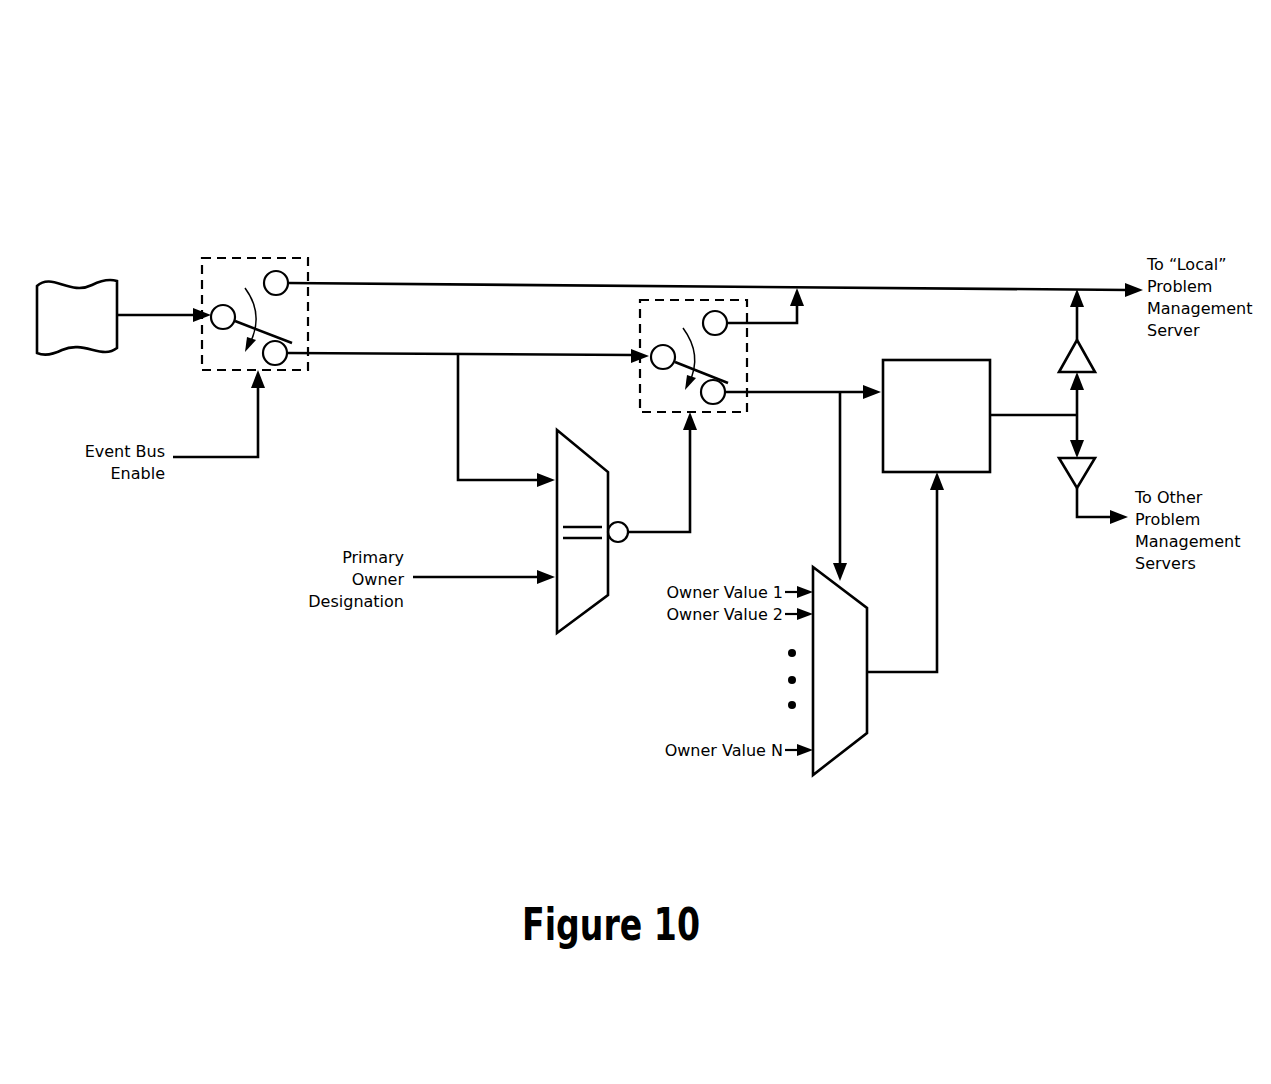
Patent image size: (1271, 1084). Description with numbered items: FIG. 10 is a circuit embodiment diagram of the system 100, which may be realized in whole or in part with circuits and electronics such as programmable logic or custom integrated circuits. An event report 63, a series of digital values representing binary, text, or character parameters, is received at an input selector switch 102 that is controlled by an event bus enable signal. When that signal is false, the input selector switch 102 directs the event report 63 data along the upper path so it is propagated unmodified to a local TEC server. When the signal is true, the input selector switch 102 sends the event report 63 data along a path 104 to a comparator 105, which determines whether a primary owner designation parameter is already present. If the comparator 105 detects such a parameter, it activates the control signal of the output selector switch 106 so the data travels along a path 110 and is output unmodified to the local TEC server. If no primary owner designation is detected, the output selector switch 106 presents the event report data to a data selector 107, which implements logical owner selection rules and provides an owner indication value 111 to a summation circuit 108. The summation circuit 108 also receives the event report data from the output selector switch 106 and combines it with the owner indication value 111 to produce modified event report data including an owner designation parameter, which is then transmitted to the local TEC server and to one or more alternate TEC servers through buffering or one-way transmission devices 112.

The event report 63 is at (70, 281).
The system 100 is at (992, 136).
The input selector switch 102 is at (270, 258).
The path 104 is at (392, 352).
The comparator 105 is at (613, 487).
The output selector switch 106 is at (638, 333).
The data selector 107 is at (853, 588).
The summation circuit 108 is at (932, 359).
The path 110 is at (799, 323).
The owner indication value 111 is at (938, 621).
The bidirectional buffer 112 is at (1080, 420).